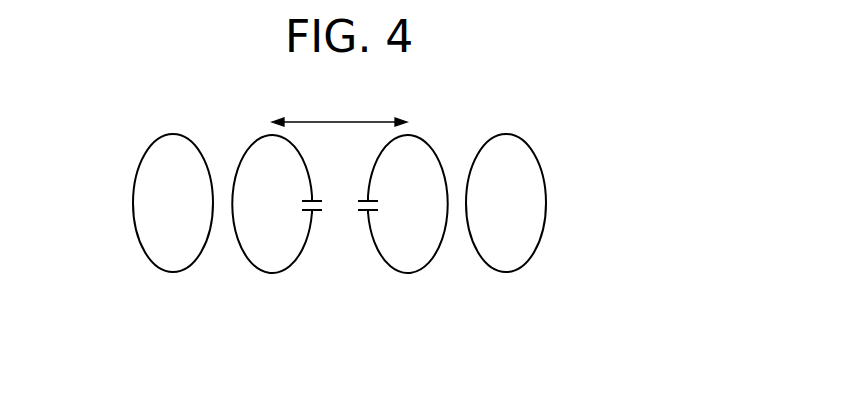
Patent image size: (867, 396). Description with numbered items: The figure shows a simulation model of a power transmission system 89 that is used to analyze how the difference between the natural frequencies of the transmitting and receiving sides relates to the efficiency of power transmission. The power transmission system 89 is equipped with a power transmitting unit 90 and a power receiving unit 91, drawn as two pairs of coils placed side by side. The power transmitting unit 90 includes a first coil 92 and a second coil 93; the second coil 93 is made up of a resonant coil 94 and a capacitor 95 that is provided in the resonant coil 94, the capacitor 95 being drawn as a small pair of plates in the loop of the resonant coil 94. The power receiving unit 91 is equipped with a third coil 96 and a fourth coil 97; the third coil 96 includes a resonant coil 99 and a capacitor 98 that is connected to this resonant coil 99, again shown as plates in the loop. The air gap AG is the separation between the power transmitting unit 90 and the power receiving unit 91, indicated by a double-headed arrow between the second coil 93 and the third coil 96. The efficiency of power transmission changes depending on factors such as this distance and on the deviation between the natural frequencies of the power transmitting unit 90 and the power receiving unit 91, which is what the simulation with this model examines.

The power transmission system 89 is at (548, 109).
The air gap AG is at (340, 125).
The power transmitting unit 90 is at (312, 344).
The power receiving unit 91 is at (527, 344).
The first coil 92 is at (172, 272).
The second coil 93 is at (335, 316).
The resonant coil 94 is at (273, 272).
The capacitor 95 is at (312, 212).
The third coil 96 is at (343, 316).
The fourth coil 97 is at (506, 272).
The capacitor 98 is at (367, 212).
The resonant coil 99 is at (407, 272).